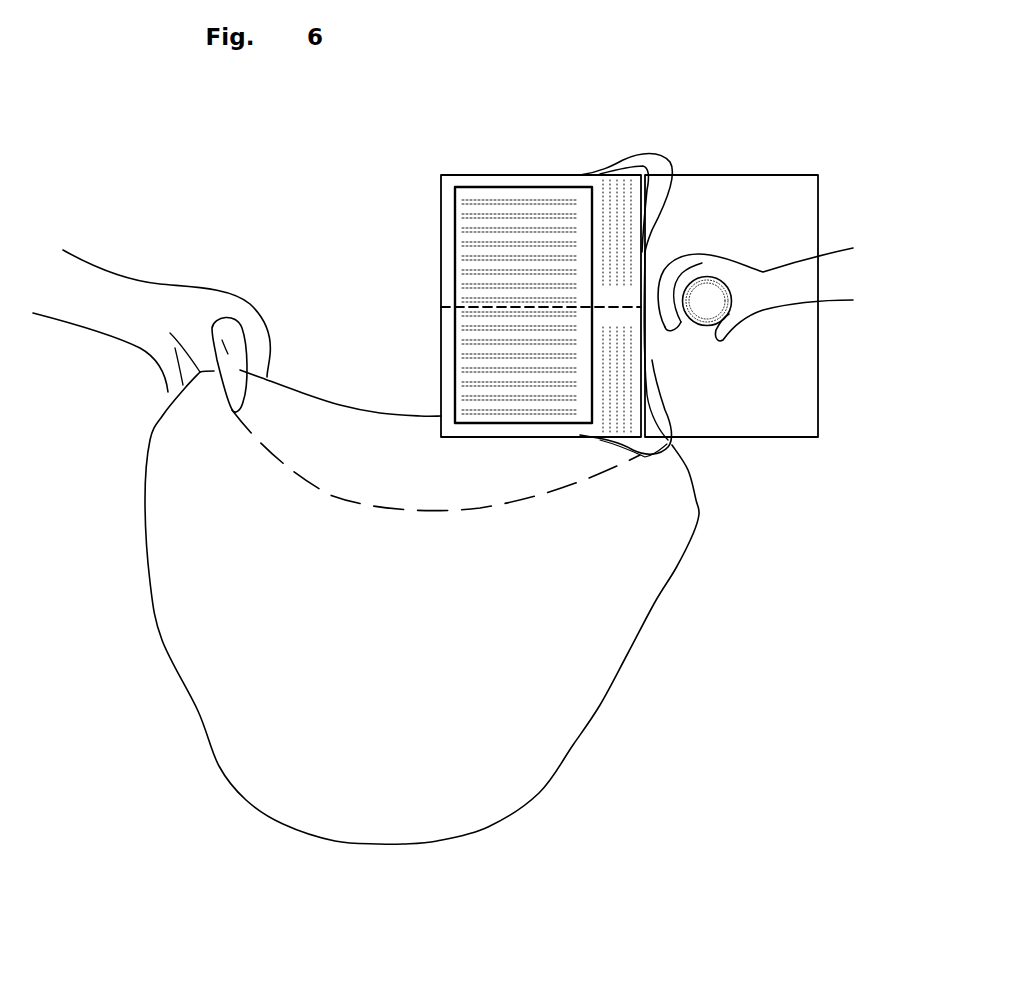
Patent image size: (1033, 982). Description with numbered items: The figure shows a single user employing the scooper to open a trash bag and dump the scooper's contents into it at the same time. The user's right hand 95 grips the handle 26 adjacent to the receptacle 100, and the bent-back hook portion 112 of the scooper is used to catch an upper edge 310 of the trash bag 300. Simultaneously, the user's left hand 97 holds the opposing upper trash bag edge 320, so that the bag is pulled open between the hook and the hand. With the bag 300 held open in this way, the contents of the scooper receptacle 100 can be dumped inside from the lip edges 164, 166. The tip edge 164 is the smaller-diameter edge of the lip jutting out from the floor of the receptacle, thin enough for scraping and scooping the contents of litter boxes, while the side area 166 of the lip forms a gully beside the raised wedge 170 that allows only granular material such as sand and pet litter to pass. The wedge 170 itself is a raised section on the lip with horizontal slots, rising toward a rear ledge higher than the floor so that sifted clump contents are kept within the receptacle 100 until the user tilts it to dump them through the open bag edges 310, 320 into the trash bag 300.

The handle 26 is at (702, 325).
The right hand 95 is at (733, 277).
The left hand 97 is at (178, 303).
The receptacle 100 is at (720, 217).
The bent-back hook portion 112 is at (672, 438).
The tip edge 164 is at (440, 378).
The side area of lip 166 is at (486, 428).
The wedge 170 is at (470, 341).
The trash bag 300 is at (552, 700).
The upper edge of trash bag 310 is at (607, 473).
The opposing upper trash bag edge 320 is at (200, 372).